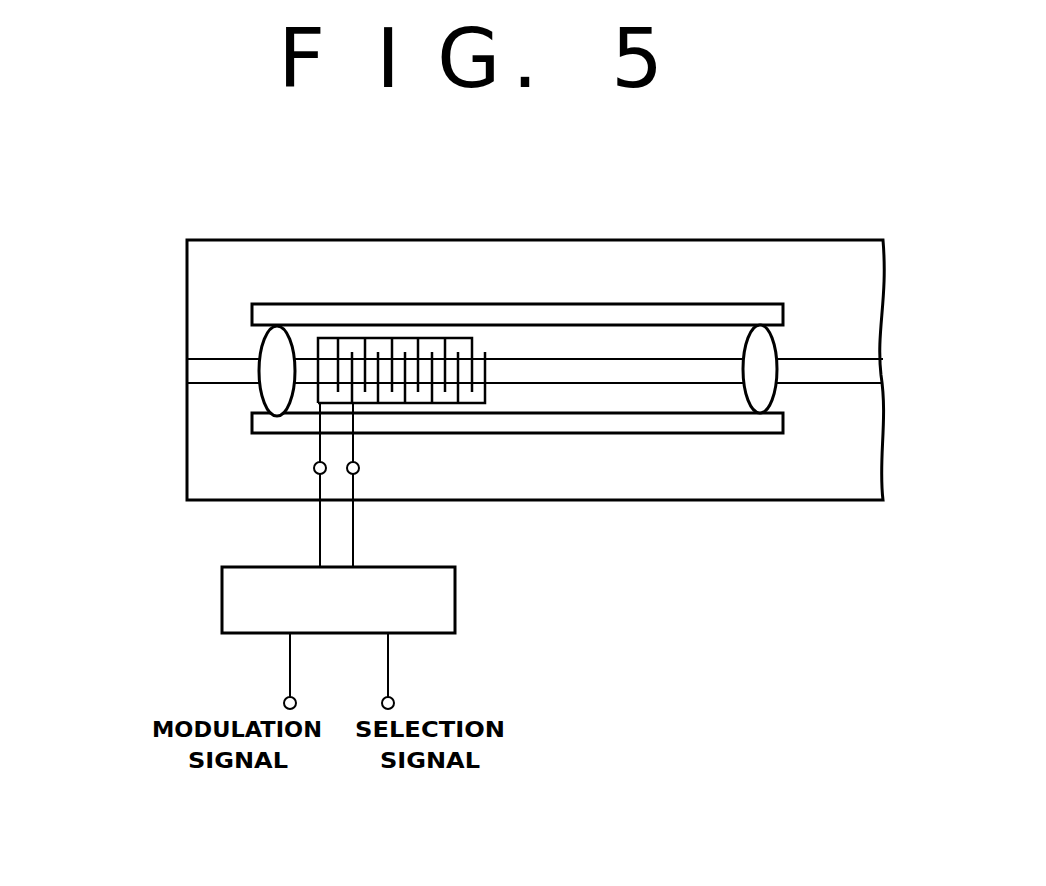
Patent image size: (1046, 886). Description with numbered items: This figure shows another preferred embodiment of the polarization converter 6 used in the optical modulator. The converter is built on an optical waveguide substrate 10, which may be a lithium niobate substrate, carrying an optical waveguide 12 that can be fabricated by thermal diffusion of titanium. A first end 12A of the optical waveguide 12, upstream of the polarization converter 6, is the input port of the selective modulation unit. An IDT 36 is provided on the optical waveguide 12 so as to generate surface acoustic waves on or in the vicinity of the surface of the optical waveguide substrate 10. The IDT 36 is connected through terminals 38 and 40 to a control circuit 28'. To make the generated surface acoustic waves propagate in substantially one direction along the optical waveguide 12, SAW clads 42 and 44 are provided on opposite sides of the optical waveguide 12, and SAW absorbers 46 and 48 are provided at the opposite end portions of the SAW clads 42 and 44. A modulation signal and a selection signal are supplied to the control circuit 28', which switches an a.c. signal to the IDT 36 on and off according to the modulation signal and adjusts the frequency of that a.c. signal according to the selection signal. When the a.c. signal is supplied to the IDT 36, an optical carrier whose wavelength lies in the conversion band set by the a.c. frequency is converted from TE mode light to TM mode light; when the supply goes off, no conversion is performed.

The polarization converter 6 is at (397, 290).
The optical waveguide substrate 10 is at (276, 240).
The optical waveguide 12 is at (217, 388).
The first end of the optical waveguide 12A is at (187, 372).
The control circuit 28' is at (376, 638).
The IDT 36 is at (490, 397).
The terminal 38 is at (315, 473).
The terminal 40 is at (358, 473).
The SAW clad 42 is at (671, 304).
The SAW clad 44 is at (652, 433).
The SAW absorber 46 is at (259, 337).
The SAW absorber 48 is at (778, 342).